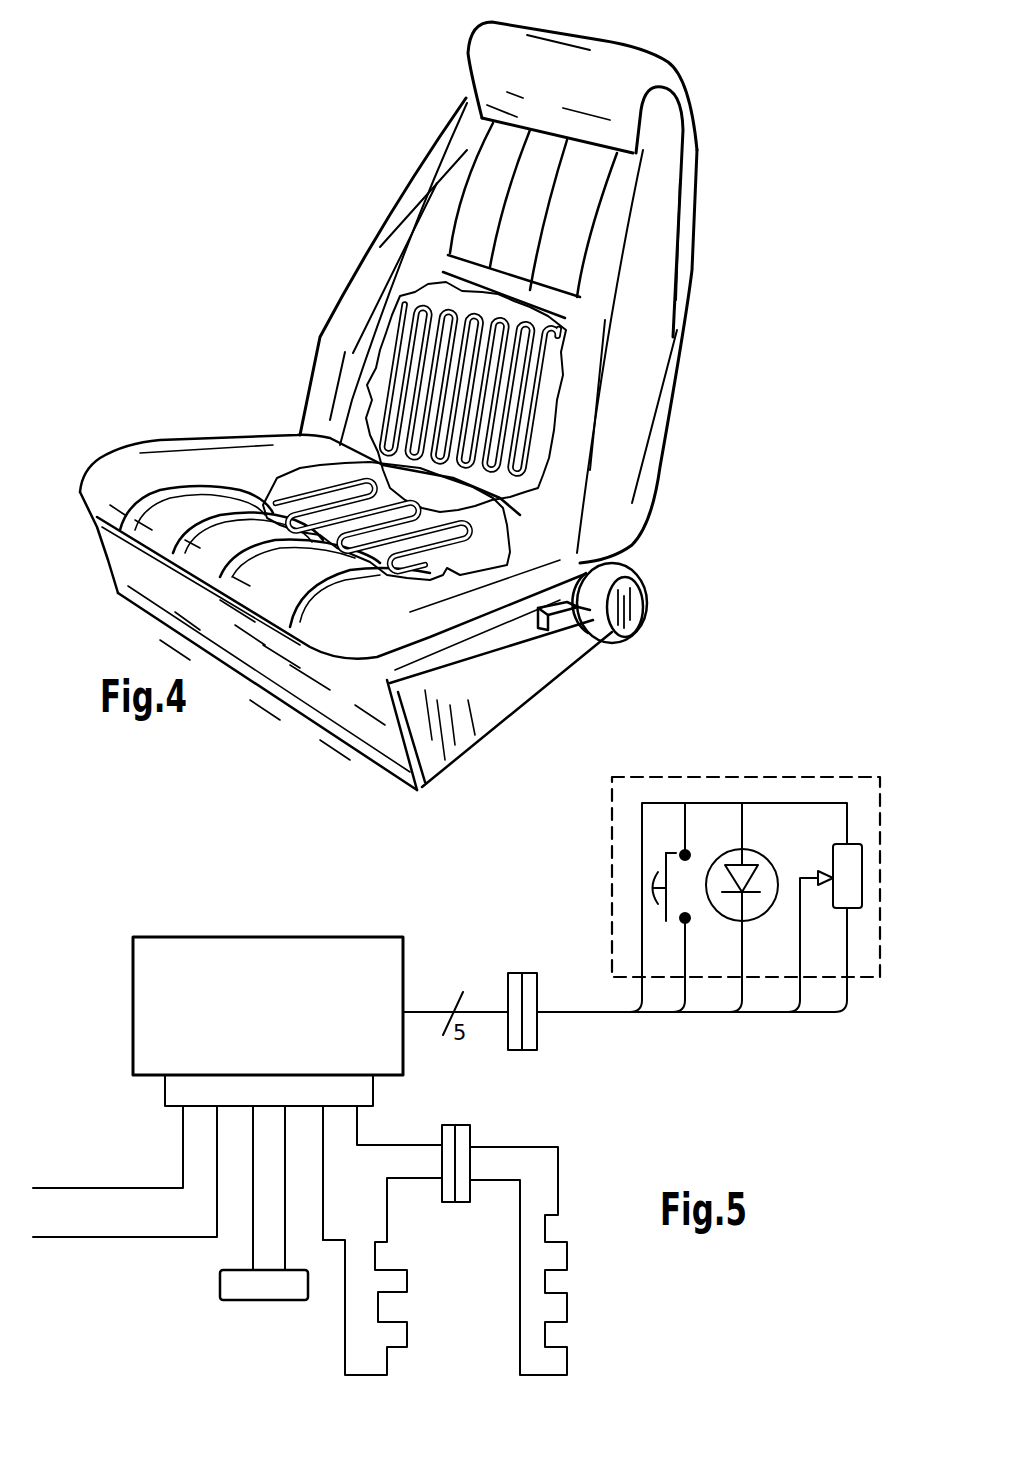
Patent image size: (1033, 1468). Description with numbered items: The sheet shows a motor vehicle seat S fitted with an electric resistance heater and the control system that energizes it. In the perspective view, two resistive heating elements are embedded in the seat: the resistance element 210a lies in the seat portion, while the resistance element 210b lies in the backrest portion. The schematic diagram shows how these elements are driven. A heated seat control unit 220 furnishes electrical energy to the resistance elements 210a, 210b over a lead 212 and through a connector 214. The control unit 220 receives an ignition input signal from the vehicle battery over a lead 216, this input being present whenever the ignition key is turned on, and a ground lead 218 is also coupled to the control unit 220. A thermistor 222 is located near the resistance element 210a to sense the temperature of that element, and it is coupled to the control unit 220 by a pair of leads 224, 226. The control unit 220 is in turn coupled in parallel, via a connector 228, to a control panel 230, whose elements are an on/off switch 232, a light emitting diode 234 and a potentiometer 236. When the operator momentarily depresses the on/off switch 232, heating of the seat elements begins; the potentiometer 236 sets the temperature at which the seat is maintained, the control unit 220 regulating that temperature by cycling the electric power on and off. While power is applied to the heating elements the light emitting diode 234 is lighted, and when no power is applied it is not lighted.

In FIG. 4, the vehicle seat S is at (728, 310).
In FIG. 4, the resistance element 210a is at (350, 520).
In FIG. 5, the resistance element 210a is at (363, 1377).
In FIG. 4, the resistance element 210b is at (503, 383).
In FIG. 5, the resistance element 210b is at (543, 1380).
In FIG. 5, the lead 212 is at (403, 1143).
In FIG. 5, the connector 214 is at (470, 1135).
In FIG. 5, the lead 216 is at (183, 1133).
In FIG. 5, the ground lead 218 is at (148, 1237).
In FIG. 5, the heated seat control unit 220 is at (283, 937).
In FIG. 5, the thermistor 222 is at (250, 1300).
In FIG. 5, the lead 224 is at (253, 1242).
In FIG. 5, the lead 226 is at (287, 1242).
In FIG. 5, the connector 228 is at (525, 973).
In FIG. 5, the control panel 230 is at (722, 874).
In FIG. 5, the on/off switch 232 is at (668, 853).
In FIG. 5, the light emitting diode 234 is at (770, 857).
In FIG. 5, the potentiometer 236 is at (863, 887).